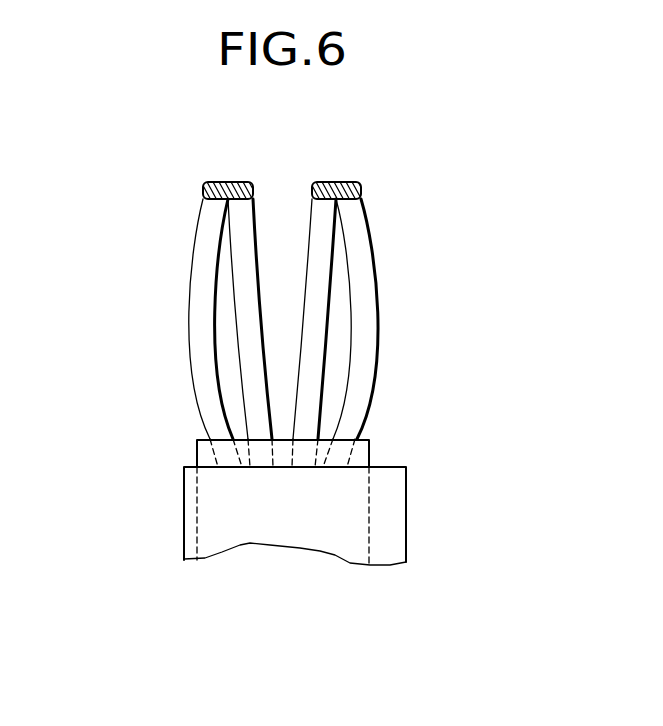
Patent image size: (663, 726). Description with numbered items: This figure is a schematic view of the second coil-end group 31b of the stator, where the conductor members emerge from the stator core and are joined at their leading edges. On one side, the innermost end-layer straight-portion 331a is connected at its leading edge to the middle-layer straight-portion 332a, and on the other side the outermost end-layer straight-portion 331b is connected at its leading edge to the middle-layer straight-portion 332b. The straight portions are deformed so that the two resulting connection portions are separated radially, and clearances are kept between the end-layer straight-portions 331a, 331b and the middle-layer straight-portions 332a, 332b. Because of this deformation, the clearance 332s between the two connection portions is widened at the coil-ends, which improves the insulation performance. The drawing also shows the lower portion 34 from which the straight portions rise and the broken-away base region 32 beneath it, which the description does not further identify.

The second coil-end group 31b is at (427, 193).
The end-layer straight-portion 331a is at (198, 330).
The end-layer straight-portion 331b is at (363, 329).
The middle-layer straight-portion 332a is at (245, 287).
The middle-layer straight-portion 332b is at (318, 283).
The clearance 332s is at (280, 215).
The brush base 34 is at (203, 455).
The brush holder 32 is at (342, 543).